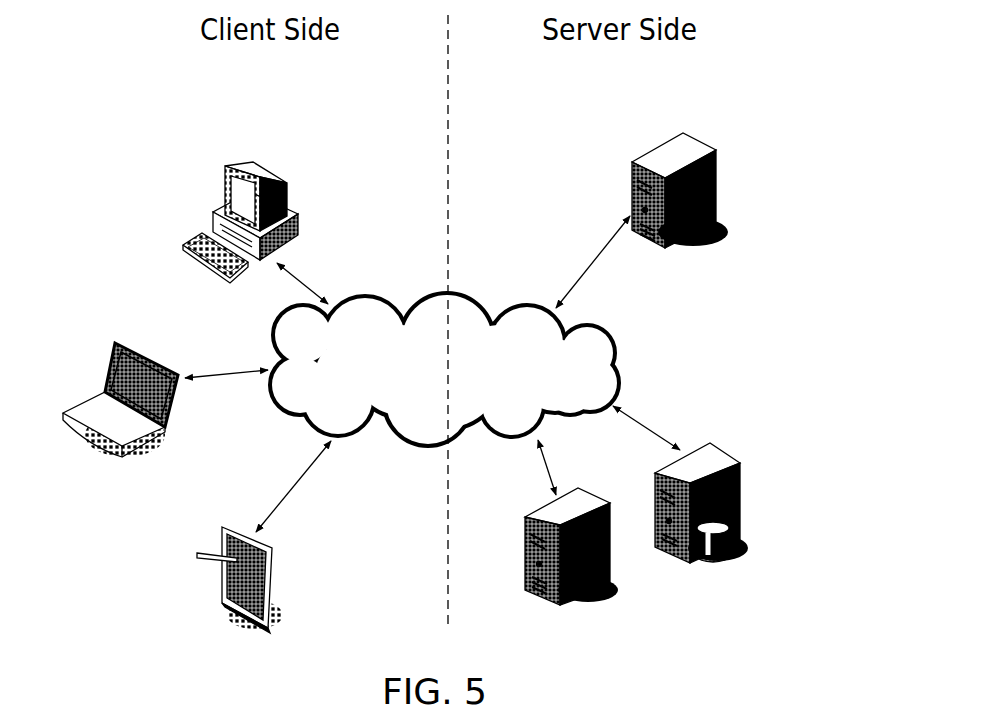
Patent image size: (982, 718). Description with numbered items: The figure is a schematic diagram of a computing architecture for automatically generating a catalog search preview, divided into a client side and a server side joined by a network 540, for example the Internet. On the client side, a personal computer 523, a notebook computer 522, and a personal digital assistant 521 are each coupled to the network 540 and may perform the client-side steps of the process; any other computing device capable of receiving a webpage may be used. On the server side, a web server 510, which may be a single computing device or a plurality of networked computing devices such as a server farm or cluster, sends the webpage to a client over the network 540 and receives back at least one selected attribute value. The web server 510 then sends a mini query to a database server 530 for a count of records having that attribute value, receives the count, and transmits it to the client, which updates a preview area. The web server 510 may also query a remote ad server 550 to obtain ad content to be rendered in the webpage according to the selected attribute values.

The web server 510 is at (632, 160).
The personal digital assistant 521 is at (222, 602).
The notebook computer 522 is at (107, 360).
The personal computer 523 is at (222, 165).
The database server 530 is at (740, 488).
The network 540 is at (617, 368).
The ad server 550 is at (577, 608).